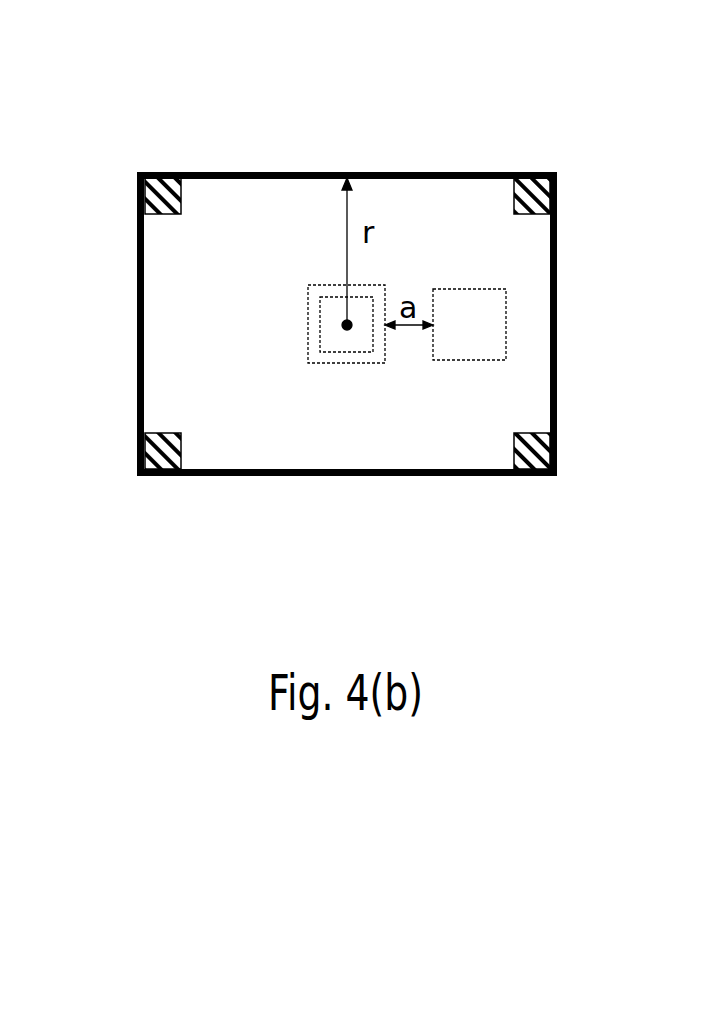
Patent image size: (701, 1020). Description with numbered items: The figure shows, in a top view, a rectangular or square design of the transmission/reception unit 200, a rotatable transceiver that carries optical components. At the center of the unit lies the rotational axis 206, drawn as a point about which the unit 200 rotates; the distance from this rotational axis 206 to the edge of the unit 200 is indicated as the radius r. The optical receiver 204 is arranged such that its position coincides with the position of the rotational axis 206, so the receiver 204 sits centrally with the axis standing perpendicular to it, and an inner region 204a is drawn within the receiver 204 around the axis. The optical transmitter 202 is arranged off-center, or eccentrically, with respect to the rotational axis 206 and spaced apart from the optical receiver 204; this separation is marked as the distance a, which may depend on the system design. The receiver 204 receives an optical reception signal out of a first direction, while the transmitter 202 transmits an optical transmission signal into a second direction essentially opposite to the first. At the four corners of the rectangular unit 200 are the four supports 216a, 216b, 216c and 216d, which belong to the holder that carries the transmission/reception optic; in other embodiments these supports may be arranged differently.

The transmission/reception unit 200 is at (502, 133).
The optical transmitter 202 is at (475, 333).
The optical receiver 204 is at (372, 358).
The light source inner region 204a is at (340, 345).
The rotational axis 206 is at (342, 325).
The support 216a is at (556, 203).
The support 216b is at (557, 458).
The support 216c is at (145, 191).
The support 216d is at (145, 455).